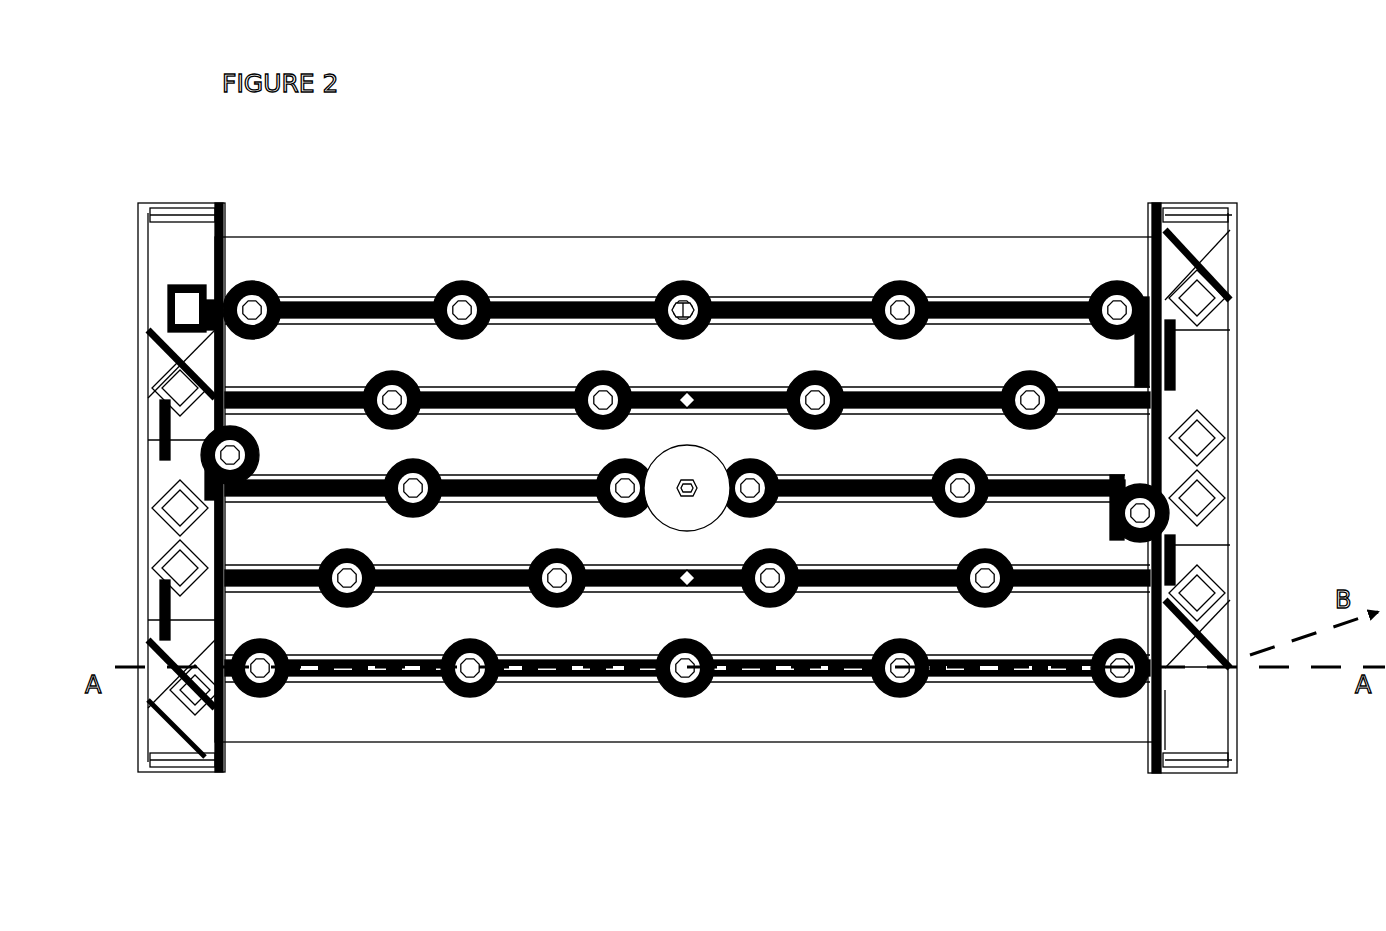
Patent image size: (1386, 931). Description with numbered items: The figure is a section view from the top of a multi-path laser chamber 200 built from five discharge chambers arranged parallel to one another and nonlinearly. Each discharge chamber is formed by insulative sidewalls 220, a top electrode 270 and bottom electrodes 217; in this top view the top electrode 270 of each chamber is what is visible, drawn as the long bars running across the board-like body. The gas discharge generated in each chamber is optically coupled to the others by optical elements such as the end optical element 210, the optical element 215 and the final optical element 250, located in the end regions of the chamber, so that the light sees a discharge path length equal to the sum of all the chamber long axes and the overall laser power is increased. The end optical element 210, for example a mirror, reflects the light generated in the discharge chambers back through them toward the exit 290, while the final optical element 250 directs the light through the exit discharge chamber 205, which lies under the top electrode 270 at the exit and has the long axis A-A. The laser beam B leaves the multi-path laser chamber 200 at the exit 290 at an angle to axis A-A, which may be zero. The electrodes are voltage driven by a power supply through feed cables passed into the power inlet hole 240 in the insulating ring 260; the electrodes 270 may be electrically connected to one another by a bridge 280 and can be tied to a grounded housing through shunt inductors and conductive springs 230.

The multi-path laser chamber 200 is at (163, 165).
The exit discharge chamber 205 is at (395, 675).
The end optical element 210 is at (186, 305).
The optical element 215 is at (140, 385).
The bottom electrodes 217 is at (360, 265).
The insulative sidewalls 220 is at (550, 330).
The conductive springs 230 is at (705, 290).
The power inlet hole 240 is at (690, 485).
The final optical element 250 is at (205, 685).
The insulating ring 260 is at (655, 510).
The top electrode 270 is at (870, 485).
The bridge 280 is at (1172, 535).
The exit 290 is at (1240, 665).